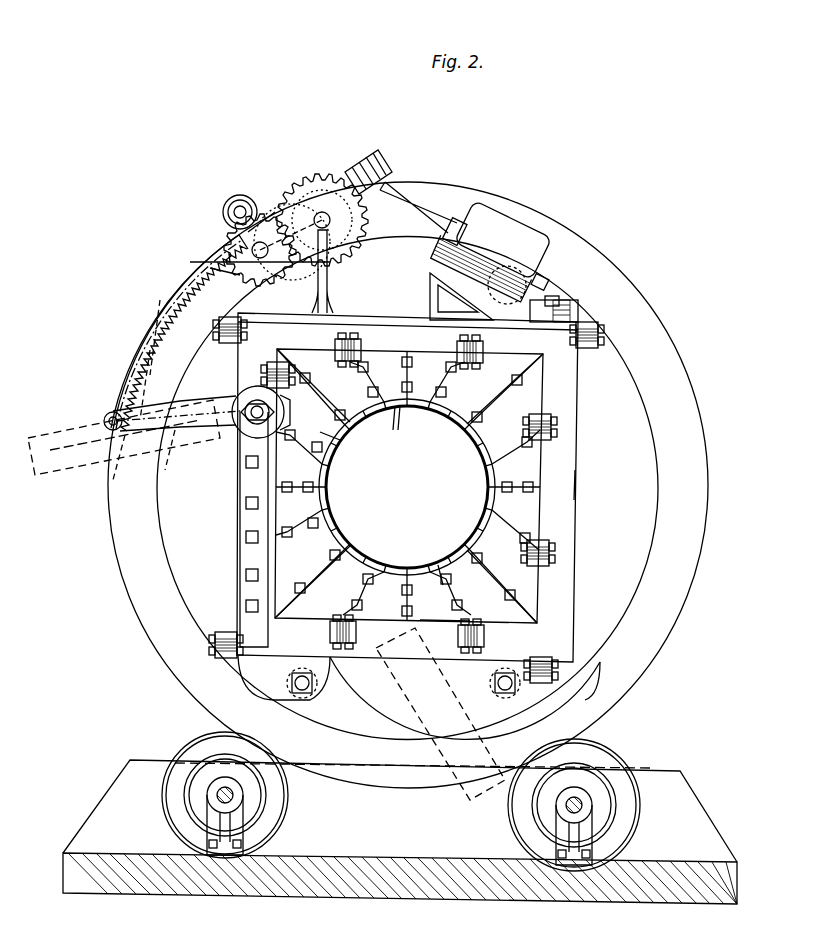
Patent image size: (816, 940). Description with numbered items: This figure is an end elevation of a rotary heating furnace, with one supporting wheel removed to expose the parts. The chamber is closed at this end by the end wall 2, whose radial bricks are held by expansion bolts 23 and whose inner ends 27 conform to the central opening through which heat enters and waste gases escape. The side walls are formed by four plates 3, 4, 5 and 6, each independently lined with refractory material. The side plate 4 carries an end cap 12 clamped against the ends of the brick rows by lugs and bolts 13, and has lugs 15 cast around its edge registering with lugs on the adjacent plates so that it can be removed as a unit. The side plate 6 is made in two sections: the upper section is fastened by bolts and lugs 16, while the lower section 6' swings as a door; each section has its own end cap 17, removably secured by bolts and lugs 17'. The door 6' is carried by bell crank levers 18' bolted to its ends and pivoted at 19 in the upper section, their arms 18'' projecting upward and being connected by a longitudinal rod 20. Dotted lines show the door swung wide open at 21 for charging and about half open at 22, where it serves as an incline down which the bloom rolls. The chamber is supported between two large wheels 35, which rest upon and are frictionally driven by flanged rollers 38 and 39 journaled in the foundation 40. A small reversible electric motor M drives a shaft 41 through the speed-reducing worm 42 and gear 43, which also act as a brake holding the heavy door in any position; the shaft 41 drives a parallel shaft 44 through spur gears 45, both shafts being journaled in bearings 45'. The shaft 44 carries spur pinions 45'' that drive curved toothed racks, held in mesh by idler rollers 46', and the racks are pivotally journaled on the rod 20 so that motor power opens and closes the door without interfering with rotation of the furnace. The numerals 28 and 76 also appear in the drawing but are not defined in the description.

The end wall 2 is at (340, 555).
The side plate 3 is at (378, 318).
The side plate 4 is at (576, 492).
The side plate 5 is at (435, 645).
The side plate 6 is at (248, 403).
The swinging door 6' is at (236, 529).
The end cap 12 is at (560, 325).
The lugs and bolts 13 is at (590, 350).
The lugs 15 is at (362, 345).
The bolts and lugs 16 is at (330, 312).
The end cap 17 is at (245, 502).
The bolts and lugs 17' is at (198, 490).
The bell crank levers 18' is at (233, 445).
The arms 18'' is at (176, 392).
The pivot 19 is at (256, 428).
The longitudinal rod 20 is at (106, 418).
The open door position 21 is at (85, 468).
The half-open door position 22 is at (470, 785).
The expansion bolts 23 is at (455, 575).
The inner ends of bricks 27 is at (322, 473).
The radial rods 28 is at (350, 372).
The wheels 35 is at (640, 322).
The flanged roller 38 is at (280, 815).
The flanged roller 39 is at (530, 828).
The foundation 40 is at (318, 870).
The shaft 41 is at (372, 215).
The worm 42 is at (375, 158).
The gear 43 is at (325, 175).
The parallel shaft 44 is at (262, 222).
The spur gears 45 is at (260, 224).
The bearings 45' is at (329, 242).
The spur pinions 45'' is at (239, 262).
The idler rollers 46' is at (218, 203).
The rack segment 76 is at (152, 312).
The electric motor M is at (508, 225).